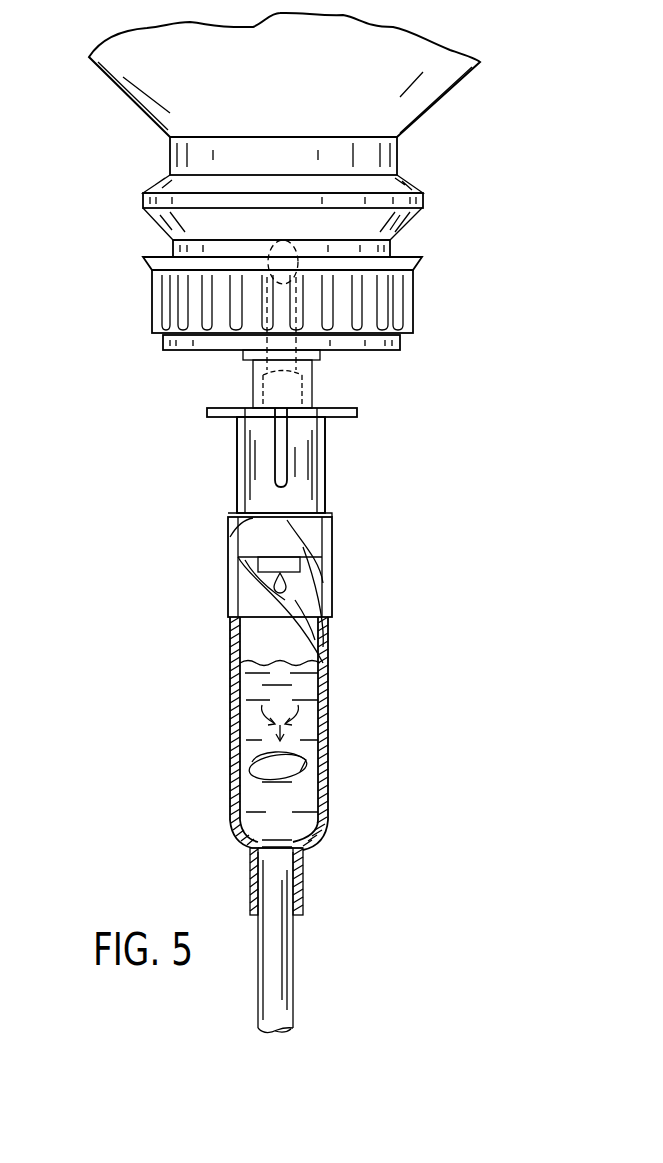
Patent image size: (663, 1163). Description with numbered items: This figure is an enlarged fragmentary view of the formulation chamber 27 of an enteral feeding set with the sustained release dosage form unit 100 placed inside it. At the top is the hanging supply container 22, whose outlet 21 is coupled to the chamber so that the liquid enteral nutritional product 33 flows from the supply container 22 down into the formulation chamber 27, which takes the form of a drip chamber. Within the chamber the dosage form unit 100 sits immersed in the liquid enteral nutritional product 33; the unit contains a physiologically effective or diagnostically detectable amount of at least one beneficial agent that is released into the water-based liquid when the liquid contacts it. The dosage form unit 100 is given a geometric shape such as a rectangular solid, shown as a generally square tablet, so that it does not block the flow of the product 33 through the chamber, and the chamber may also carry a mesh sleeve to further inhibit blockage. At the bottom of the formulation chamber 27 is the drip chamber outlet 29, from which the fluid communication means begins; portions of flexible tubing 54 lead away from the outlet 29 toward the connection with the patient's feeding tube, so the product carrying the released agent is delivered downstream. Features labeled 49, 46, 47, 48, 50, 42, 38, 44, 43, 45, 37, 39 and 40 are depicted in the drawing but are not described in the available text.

The supply container 22 is at (438, 103).
The outlet 21 is at (413, 313).
The vent channel 49 is at (285, 233).
The pierceable membrane 46 is at (243, 368).
The spike flange 47 is at (338, 407).
The spike housing 48 is at (255, 438).
The spike 50 is at (277, 465).
The upper chamber portion 42 is at (302, 458).
The drip chamber 38 is at (330, 530).
The baffle wall 44 is at (240, 535).
The drop former 43 is at (305, 572).
The fluid drop 45 is at (323, 602).
The formulation chamber 27 is at (224, 654).
The liquid enteral nutritional product 33 is at (307, 708).
The chamber wall 37 is at (230, 735).
The sustained release dosage form unit 100 is at (303, 767).
The chamber bottom 39 is at (310, 847).
The outlet port 40 is at (277, 857).
The drip chamber outlet 29 is at (303, 897).
The flexible tubing 54 is at (295, 980).